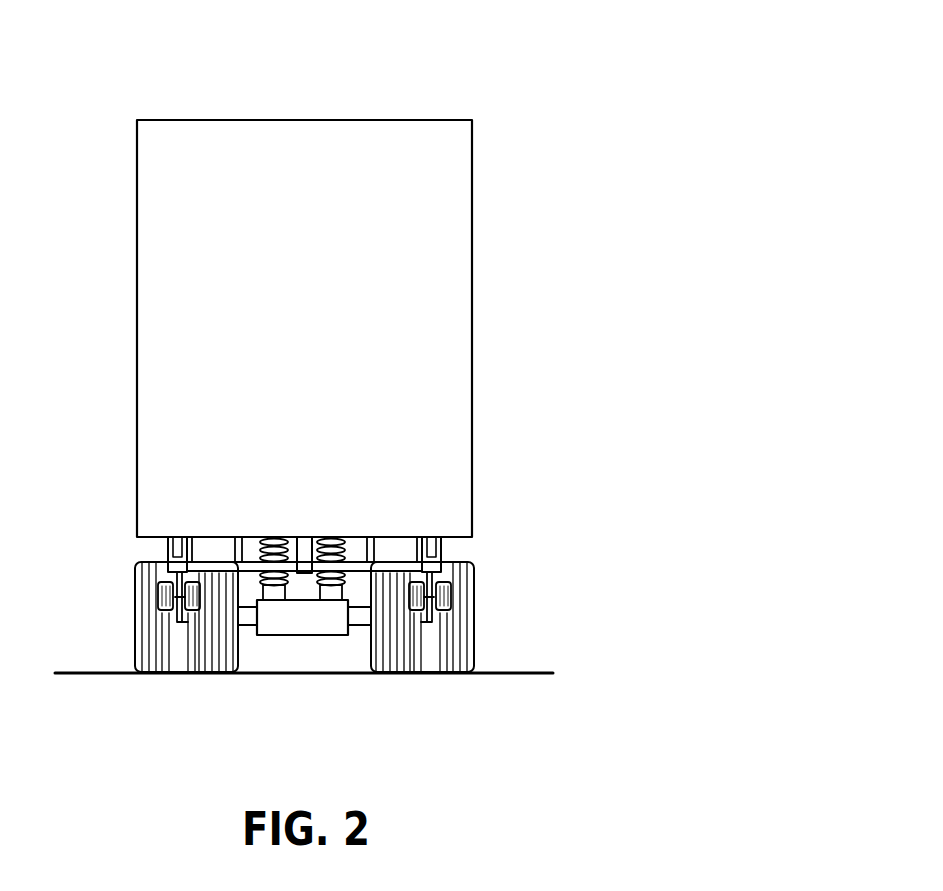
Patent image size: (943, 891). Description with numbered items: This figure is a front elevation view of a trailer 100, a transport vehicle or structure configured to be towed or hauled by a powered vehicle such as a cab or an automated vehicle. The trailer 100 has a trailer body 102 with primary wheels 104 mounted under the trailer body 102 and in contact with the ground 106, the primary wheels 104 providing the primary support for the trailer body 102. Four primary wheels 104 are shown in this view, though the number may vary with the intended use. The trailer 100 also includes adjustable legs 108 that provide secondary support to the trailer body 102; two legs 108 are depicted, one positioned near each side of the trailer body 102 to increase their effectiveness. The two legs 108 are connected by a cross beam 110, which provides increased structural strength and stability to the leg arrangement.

The trailer 100 is at (507, 61).
The trailer body 102 is at (472, 404).
The primary wheels 104 is at (135, 590).
The ground 106 is at (530, 672).
The adjustable legs 108 is at (175, 567).
The cross beam 110 is at (335, 566).